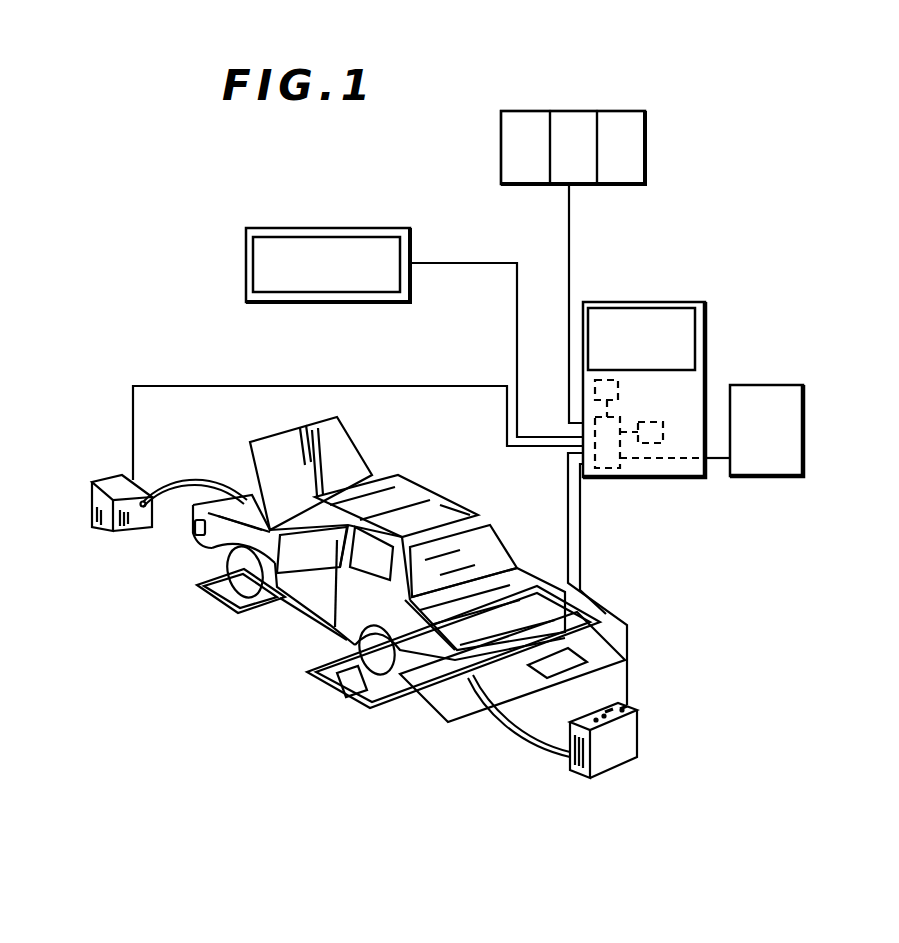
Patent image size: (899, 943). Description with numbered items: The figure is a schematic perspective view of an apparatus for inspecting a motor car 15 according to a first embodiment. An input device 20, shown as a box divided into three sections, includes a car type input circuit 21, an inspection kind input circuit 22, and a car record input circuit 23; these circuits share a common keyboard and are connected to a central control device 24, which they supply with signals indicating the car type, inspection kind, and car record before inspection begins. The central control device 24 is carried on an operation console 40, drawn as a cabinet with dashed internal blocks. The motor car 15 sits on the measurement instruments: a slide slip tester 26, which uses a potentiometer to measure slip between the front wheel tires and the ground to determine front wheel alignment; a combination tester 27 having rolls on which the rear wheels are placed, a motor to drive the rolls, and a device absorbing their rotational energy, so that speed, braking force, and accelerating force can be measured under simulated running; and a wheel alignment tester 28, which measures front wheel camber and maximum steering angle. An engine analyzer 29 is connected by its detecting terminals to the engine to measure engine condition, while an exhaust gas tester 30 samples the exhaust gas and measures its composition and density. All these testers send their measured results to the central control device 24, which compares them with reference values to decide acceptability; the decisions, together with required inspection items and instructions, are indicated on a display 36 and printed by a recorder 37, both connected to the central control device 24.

The motor car 15 is at (300, 630).
The input device 20 is at (650, 160).
The car type input circuit 21 is at (531, 111).
The inspection kind input circuit 22 is at (583, 111).
The car record input circuit 23 is at (614, 185).
The central control device 24 is at (611, 472).
The slide slip tester 26 is at (556, 667).
The combination tester 27 is at (355, 690).
The wheel alignment tester 28 is at (212, 597).
The engine analyzer 29 is at (108, 480).
The exhaust gas tester 30 is at (630, 738).
The display 36 is at (329, 228).
The recorder 37 is at (767, 385).
The operation console 40 is at (660, 302).